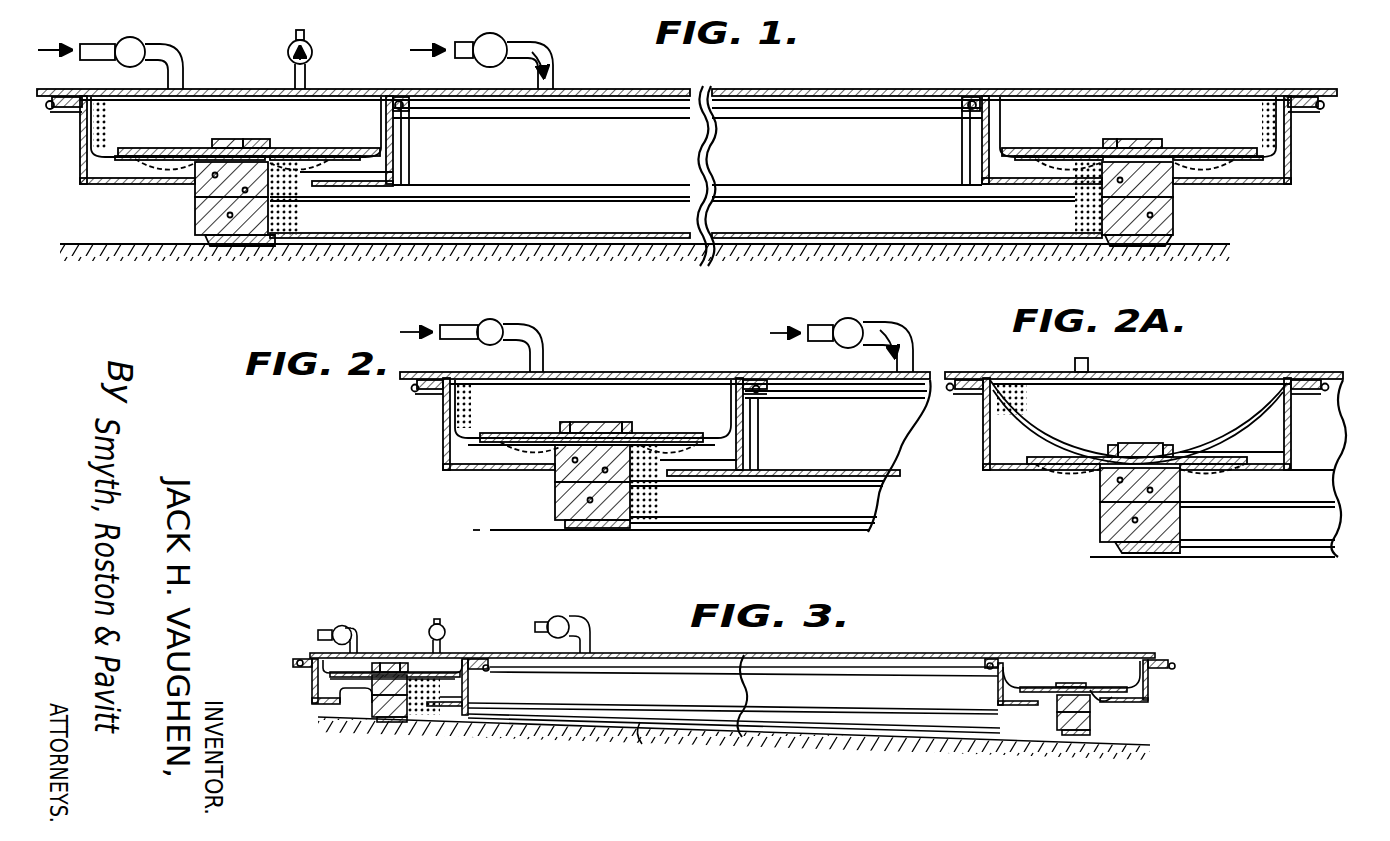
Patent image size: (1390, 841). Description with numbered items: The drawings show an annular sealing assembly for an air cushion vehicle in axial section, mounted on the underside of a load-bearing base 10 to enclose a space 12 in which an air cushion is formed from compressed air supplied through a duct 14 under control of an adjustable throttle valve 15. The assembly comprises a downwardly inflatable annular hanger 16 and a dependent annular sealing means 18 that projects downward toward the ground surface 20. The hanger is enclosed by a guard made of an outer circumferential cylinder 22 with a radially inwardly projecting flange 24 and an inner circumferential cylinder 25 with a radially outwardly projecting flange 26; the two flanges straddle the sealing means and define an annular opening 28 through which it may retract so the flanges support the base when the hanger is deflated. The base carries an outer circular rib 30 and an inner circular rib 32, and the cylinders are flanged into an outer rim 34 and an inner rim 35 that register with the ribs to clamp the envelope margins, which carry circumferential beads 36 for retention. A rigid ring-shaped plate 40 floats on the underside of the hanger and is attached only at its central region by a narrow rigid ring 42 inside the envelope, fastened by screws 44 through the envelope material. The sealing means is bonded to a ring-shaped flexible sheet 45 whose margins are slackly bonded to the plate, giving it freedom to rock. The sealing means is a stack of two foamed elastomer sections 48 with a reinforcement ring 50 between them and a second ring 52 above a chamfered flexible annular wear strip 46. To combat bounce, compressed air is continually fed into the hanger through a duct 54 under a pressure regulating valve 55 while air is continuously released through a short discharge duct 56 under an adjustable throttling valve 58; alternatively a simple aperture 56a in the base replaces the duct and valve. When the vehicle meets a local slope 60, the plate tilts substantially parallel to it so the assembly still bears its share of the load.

In FIG. 1, the load-bearing base 10 is at (667, 92).
In FIG. 2, the load-bearing base 10 is at (784, 371).
In FIG. 2A, the load-bearing base 10 is at (1335, 368).
In FIG. 3, the load-bearing base 10 is at (925, 652).
In FIG. 1, the space 12 is at (840, 162).
In FIG. 2, the space 12 is at (893, 454).
In FIG. 2A, the space 12 is at (1263, 468).
In FIG. 3, the space 12 is at (733, 696).
In FIG. 1, the duct 14 is at (556, 70).
In FIG. 2, the duct 14 is at (915, 345).
In FIG. 3, the duct 14 is at (592, 645).
In FIG. 1, the adjustable throttle valve 15 is at (496, 44).
In FIG. 2, the adjustable throttle valve 15 is at (858, 321).
In FIG. 3, the adjustable throttle valve 15 is at (562, 617).
In FIG. 1, the inflatable annular hanger 16 is at (381, 152).
In FIG. 2, the inflatable annular hanger 16 is at (752, 437).
In FIG. 2A, the inflatable annular hanger 16 is at (1236, 436).
In FIG. 3, the inflatable annular hanger 16 is at (466, 695).
In FIG. 1, the annular sealing means 18 is at (185, 212).
In FIG. 2, the annular sealing means 18 is at (548, 499).
In FIG. 3, the annular sealing means 18 is at (365, 705).
In FIG. 1, the ground surface 20 is at (496, 237).
In FIG. 2, the ground surface 20 is at (809, 518).
In FIG. 2A, the ground surface 20 is at (1260, 548).
In FIG. 3, the ground surface 20 is at (734, 723).
In FIG. 1, the outer circumferential cylinder 22 is at (80, 165).
In FIG. 2, the outer circumferential cylinder 22 is at (445, 446).
In FIG. 2A, the outer circumferential cylinder 22 is at (983, 456).
In FIG. 3, the outer circumferential cylinder 22 is at (312, 690).
In FIG. 1, the radially inwardly projecting flange 24 is at (117, 184).
In FIG. 2, the radially inwardly projecting flange 24 is at (480, 471).
In FIG. 2A, the radially inwardly projecting flange 24 is at (1010, 471).
In FIG. 3, the radially inwardly projecting flange 24 is at (325, 705).
In FIG. 1, the inner circumferential cylinder 25 is at (396, 173).
In FIG. 2, the inner circumferential cylinder 25 is at (750, 460).
In FIG. 2A, the inner circumferential cylinder 25 is at (1290, 452).
In FIG. 3, the inner circumferential cylinder 25 is at (464, 712).
In FIG. 1, the radially outwardly projecting flange 26 is at (355, 188).
In FIG. 2, the radially outwardly projecting flange 26 is at (700, 477).
In FIG. 2A, the radially outwardly projecting flange 26 is at (1250, 471).
In FIG. 3, the radially outwardly projecting flange 26 is at (440, 708).
In FIG. 1, the annular opening 28 is at (290, 190).
In FIG. 2, the annular opening 28 is at (648, 477).
In FIG. 3, the annular opening 28 is at (415, 715).
In FIG. 1, the outer circular rib 30 is at (1275, 101).
In FIG. 2, the outer circular rib 30 is at (465, 385).
In FIG. 2A, the outer circular rib 30 is at (1003, 385).
In FIG. 3, the outer circular rib 30 is at (320, 659).
In FIG. 1, the inner circular rib 32 is at (991, 100).
In FIG. 2, the inner circular rib 32 is at (735, 385).
In FIG. 3, the inner circular rib 32 is at (475, 656).
In FIG. 1, the outer rim 34 is at (77, 114).
In FIG. 2, the outer rim 34 is at (420, 396).
In FIG. 2A, the outer rim 34 is at (975, 396).
In FIG. 3, the outer rim 34 is at (308, 669).
In FIG. 1, the inner rim 35 is at (401, 113).
In FIG. 2, the inner rim 35 is at (770, 396).
In FIG. 2A, the inner rim 35 is at (1302, 396).
In FIG. 3, the inner rim 35 is at (486, 670).
In FIG. 1, the circumferential beads 36 is at (50, 110).
In FIG. 2, the circumferential beads 36 is at (411, 391).
In FIG. 2A, the circumferential beads 36 is at (949, 392).
In FIG. 3, the circumferential beads 36 is at (295, 663).
In FIG. 1, the rigid ring-shaped plate 40 is at (293, 150).
In FIG. 2, the rigid ring-shaped plate 40 is at (540, 433).
In FIG. 2A, the rigid ring-shaped plate 40 is at (1090, 457).
In FIG. 3, the rigid ring-shaped plate 40 is at (410, 668).
In FIG. 1, the rigid ring 42 is at (262, 148).
In FIG. 2, the rigid ring 42 is at (595, 432).
In FIG. 2A, the rigid ring 42 is at (1165, 446).
In FIG. 3, the rigid ring 42 is at (385, 663).
In FIG. 1, the screws 44 is at (240, 139).
In FIG. 2, the screws 44 is at (610, 422).
In FIG. 2A, the screws 44 is at (1140, 443).
In FIG. 3, the screws 44 is at (390, 667).
In FIG. 1, the ring-shaped flexible sheet 45 is at (170, 168).
In FIG. 2, the ring-shaped flexible sheet 45 is at (540, 452).
In FIG. 2A, the ring-shaped flexible sheet 45 is at (1080, 471).
In FIG. 3, the ring-shaped flexible sheet 45 is at (352, 700).
In FIG. 1, the flexible annular wear strip 46 is at (255, 247).
In FIG. 2, the flexible annular wear strip 46 is at (612, 530).
In FIG. 2A, the flexible annular wear strip 46 is at (1150, 554).
In FIG. 3, the flexible annular wear strip 46 is at (395, 723).
In FIG. 1, the foamed elastomer sections 48 is at (195, 194).
In FIG. 2, the foamed elastomer sections 48 is at (556, 470).
In FIG. 2A, the foamed elastomer sections 48 is at (1100, 488).
In FIG. 3, the foamed elastomer sections 48 is at (380, 718).
In FIG. 1, the reinforcement ring 50 is at (1095, 205).
In FIG. 2, the reinforcement ring 50 is at (575, 502).
In FIG. 2A, the reinforcement ring 50 is at (1210, 508).
In FIG. 3, the reinforcement ring 50 is at (388, 724).
In FIG. 1, the second ring 52 is at (242, 247).
In FIG. 2, the second ring 52 is at (600, 528).
In FIG. 2A, the second ring 52 is at (1185, 550).
In FIG. 3, the second ring 52 is at (430, 721).
In FIG. 1, the duct 54 is at (185, 72).
In FIG. 2, the duct 54 is at (545, 356).
In FIG. 2A, the duct 54 is at (1090, 364).
In FIG. 3, the duct 54 is at (360, 640).
In FIG. 1, the pressure regulating valve 55 is at (132, 44).
In FIG. 2, the pressure regulating valve 55 is at (493, 323).
In FIG. 3, the pressure regulating valve 55 is at (341, 625).
In FIG. 1, the short discharge duct 56 is at (307, 78).
In FIG. 3, the short discharge duct 56 is at (442, 640).
In FIG. 2, the aperture 56a is at (653, 372).
In FIG. 2A, the aperture 56a is at (1205, 372).
In FIG. 1, the adjustable throttling valve 58 is at (308, 47).
In FIG. 3, the adjustable throttling valve 58 is at (442, 625).
In FIG. 3, the local slope 60 is at (640, 724).